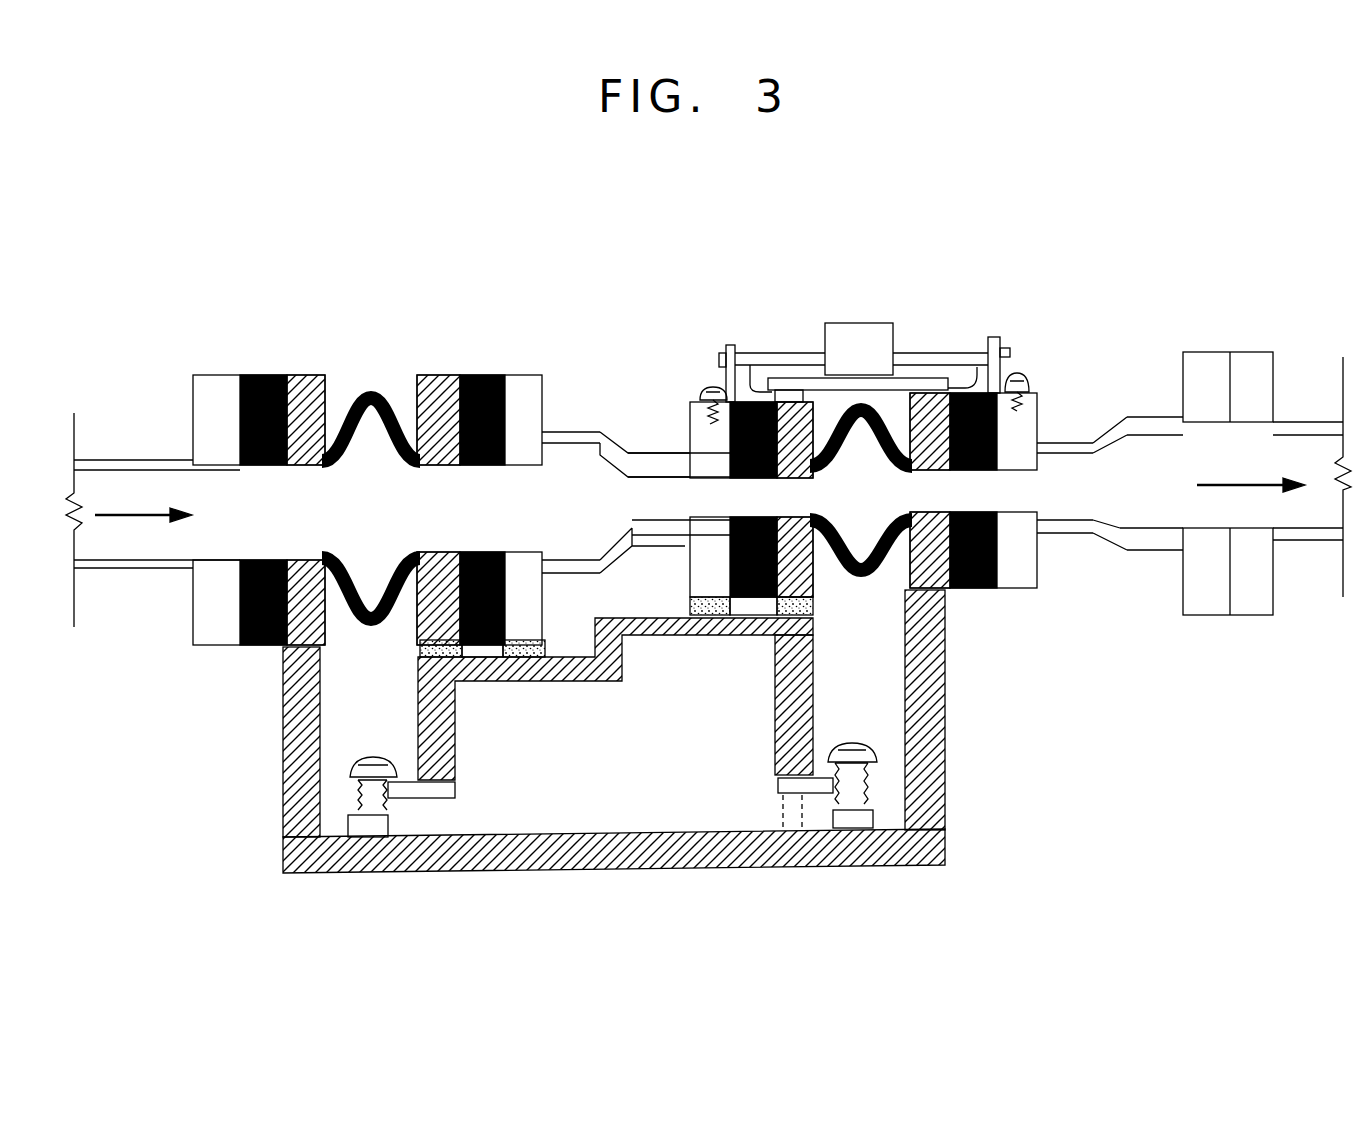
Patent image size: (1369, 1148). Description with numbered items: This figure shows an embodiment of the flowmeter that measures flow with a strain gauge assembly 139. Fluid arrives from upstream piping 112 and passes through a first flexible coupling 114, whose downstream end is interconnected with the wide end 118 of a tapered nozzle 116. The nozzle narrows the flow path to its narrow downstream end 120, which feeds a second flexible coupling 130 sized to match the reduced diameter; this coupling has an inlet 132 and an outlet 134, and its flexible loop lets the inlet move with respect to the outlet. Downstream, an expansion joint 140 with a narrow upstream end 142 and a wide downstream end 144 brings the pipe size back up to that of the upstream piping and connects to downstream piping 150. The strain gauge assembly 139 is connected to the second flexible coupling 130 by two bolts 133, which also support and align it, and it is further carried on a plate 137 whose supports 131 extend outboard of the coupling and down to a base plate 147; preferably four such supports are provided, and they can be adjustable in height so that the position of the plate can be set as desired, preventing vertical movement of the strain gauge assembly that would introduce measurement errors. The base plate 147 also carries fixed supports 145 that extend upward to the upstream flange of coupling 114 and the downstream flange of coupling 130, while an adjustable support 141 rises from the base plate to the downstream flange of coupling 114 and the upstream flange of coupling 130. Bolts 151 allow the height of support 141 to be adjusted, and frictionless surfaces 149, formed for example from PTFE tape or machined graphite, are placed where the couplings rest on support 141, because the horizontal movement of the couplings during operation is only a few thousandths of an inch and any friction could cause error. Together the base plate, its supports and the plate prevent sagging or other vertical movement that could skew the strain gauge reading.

The inlet pipe 112 is at (128, 570).
The flexible coupling 114 is at (480, 355).
The second isolator assembly 116 is at (611, 342).
The intermediate pipe section 118 is at (578, 430).
The reduced pipe section 120 is at (667, 450).
The second flexible coupling 130 is at (878, 583).
The supports 131 is at (747, 343).
The bolts 133 is at (770, 352).
The inner tube 132 is at (653, 517).
The outlet tube 134 is at (1070, 494).
The plate 137 is at (915, 378).
The strain gauge assembly 139 is at (855, 322).
The outlet assembly 140 is at (1124, 350).
The adjustable support 141 is at (622, 665).
The outlet pipe section 142 is at (1055, 440).
The outlet pipe section 144 is at (1148, 415).
The fixed supports 145 is at (283, 767).
The base plate 147 is at (620, 873).
The frictionless surfaces 149 is at (420, 650).
The flange 150 is at (1310, 540).
The bolts 151 is at (385, 755).